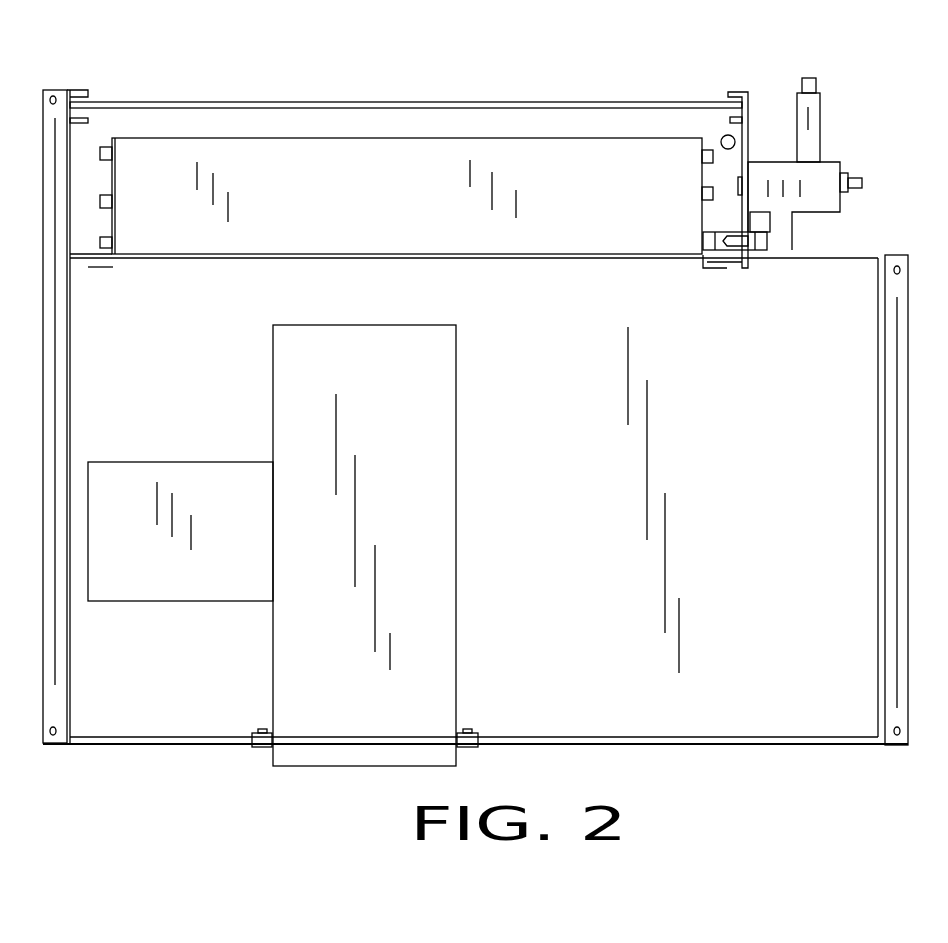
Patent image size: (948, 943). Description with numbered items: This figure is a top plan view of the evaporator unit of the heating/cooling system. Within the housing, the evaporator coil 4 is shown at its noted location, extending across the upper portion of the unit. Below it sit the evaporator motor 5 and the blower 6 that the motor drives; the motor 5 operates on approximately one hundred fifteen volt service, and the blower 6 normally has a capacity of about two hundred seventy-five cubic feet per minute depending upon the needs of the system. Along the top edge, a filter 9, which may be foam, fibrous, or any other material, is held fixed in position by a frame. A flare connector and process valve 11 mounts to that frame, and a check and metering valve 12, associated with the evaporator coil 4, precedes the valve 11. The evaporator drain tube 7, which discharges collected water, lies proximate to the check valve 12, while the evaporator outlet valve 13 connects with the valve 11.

The evaporator coil 4 is at (282, 240).
The motor 5 is at (178, 592).
The blower 6 is at (283, 645).
The evaporator drain 7 is at (737, 140).
The filter 9 is at (485, 102).
The flare connector and process valve 11 is at (820, 190).
The check and metering valve 12 is at (767, 238).
The evaporator outlet valve 13 is at (815, 80).